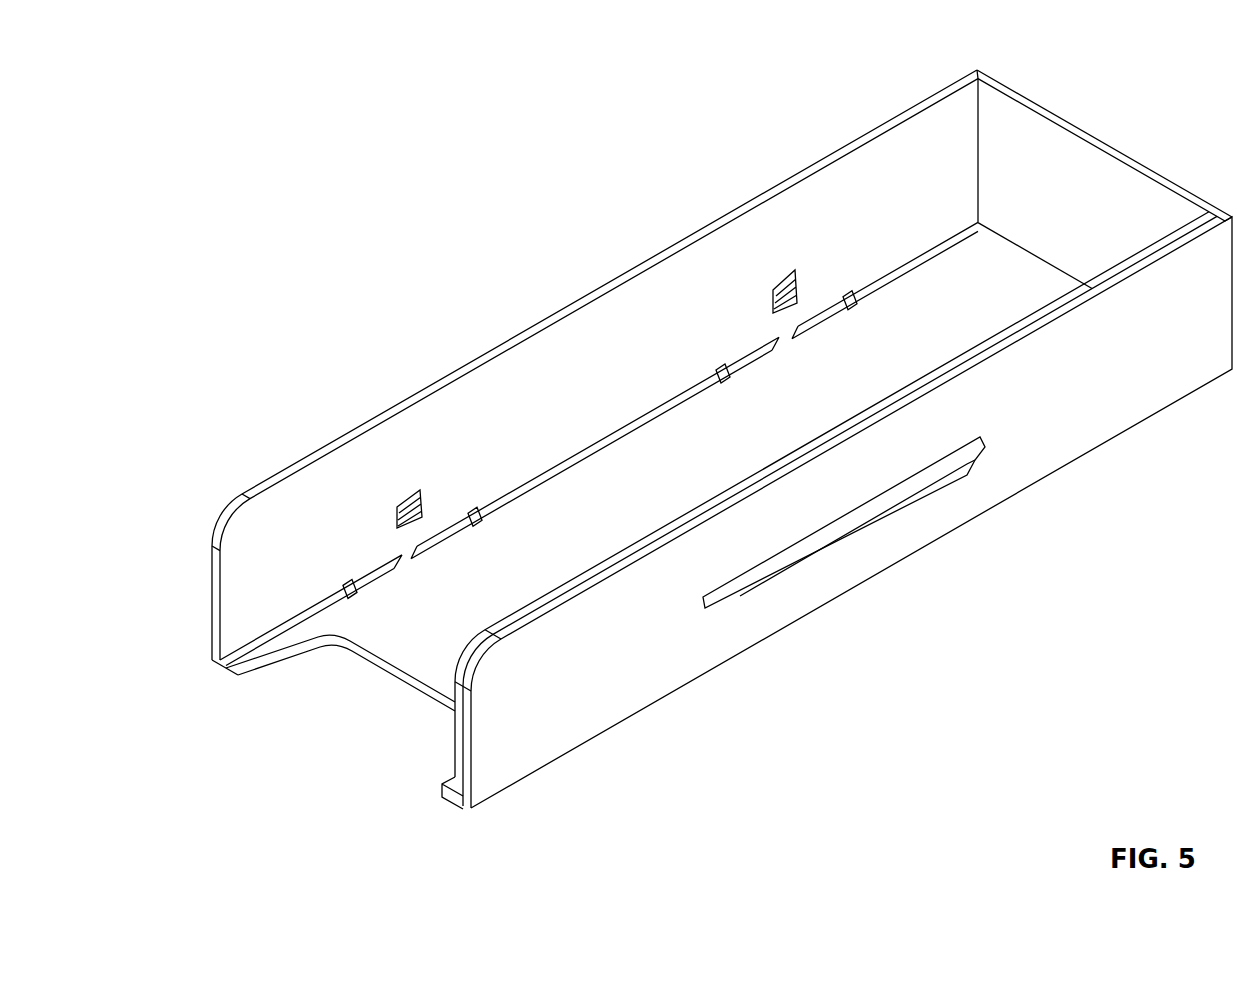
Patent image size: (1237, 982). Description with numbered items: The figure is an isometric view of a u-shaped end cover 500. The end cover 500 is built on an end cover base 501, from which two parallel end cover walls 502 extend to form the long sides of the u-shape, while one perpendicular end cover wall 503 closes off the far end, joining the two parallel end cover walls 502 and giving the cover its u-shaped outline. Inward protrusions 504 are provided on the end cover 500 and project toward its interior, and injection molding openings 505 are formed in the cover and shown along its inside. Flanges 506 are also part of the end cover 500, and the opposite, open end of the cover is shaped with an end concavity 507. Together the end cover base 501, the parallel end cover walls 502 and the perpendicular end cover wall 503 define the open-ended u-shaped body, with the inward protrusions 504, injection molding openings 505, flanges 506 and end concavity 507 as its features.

The end cover 500 is at (236, 97).
The end cover base 501 is at (703, 497).
The end cover walls 502 is at (551, 423).
The perpendicular end cover wall 503 is at (1102, 229).
The inward protrusions 504 is at (778, 284).
The injection molding openings 505 is at (418, 550).
The flanges 506 is at (818, 560).
The end concavity 507 is at (376, 680).